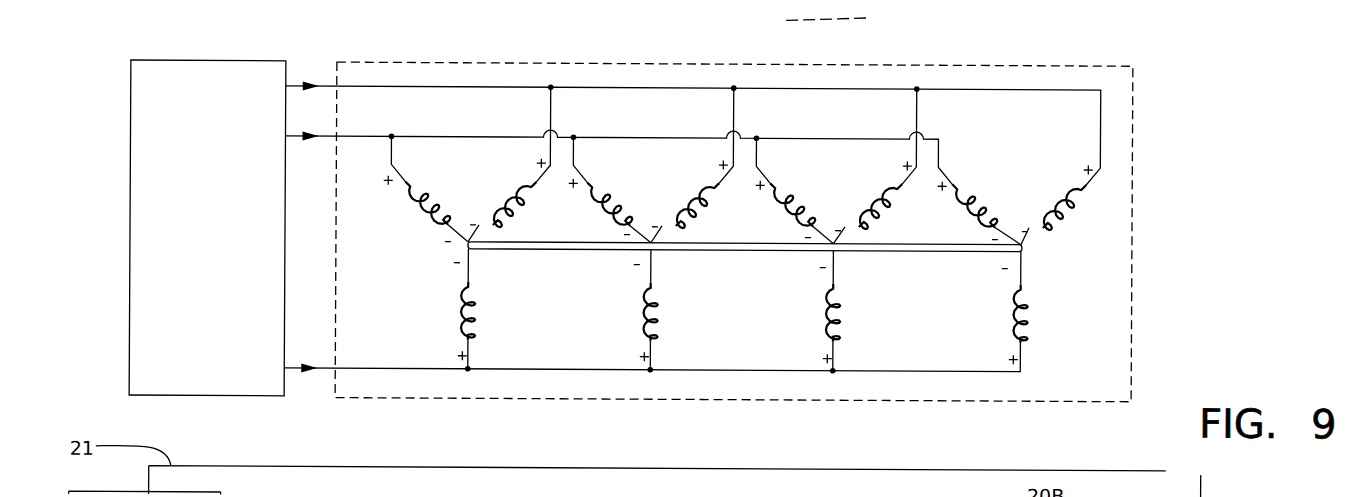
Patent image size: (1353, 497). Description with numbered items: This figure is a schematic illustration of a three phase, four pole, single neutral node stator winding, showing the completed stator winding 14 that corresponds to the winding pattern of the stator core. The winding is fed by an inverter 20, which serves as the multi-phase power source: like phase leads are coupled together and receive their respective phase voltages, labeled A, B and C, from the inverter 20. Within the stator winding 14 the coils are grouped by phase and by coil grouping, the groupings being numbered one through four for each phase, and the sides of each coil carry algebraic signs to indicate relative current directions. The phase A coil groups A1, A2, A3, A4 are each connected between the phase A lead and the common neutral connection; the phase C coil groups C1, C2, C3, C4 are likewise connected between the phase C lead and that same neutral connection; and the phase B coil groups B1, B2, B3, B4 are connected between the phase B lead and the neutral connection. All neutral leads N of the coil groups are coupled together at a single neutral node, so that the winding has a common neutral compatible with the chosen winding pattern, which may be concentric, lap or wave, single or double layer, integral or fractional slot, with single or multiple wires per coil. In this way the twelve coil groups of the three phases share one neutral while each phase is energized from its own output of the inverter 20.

The inverter 20 is at (147, 135).
The stator winding 14 is at (1137, 182).
The phase A coil group 1 A1 is at (413, 204).
The phase A coil group 2 A2 is at (597, 206).
The phase A coil group 3 A3 is at (782, 204).
The phase A coil group 4 A4 is at (962, 207).
The phase B coil group 1 B1 is at (457, 318).
The phase B coil group 2 B2 is at (640, 320).
The phase B coil group 3 B3 is at (823, 322).
The phase B coil group 4 B4 is at (1010, 325).
The phase C coil group 1 C1 is at (515, 204).
The phase C coil group 2 C2 is at (700, 205).
The phase C coil group 3 C3 is at (885, 202).
The phase C coil group 4 C4 is at (1063, 206).
The neutral lead N is at (693, 251).